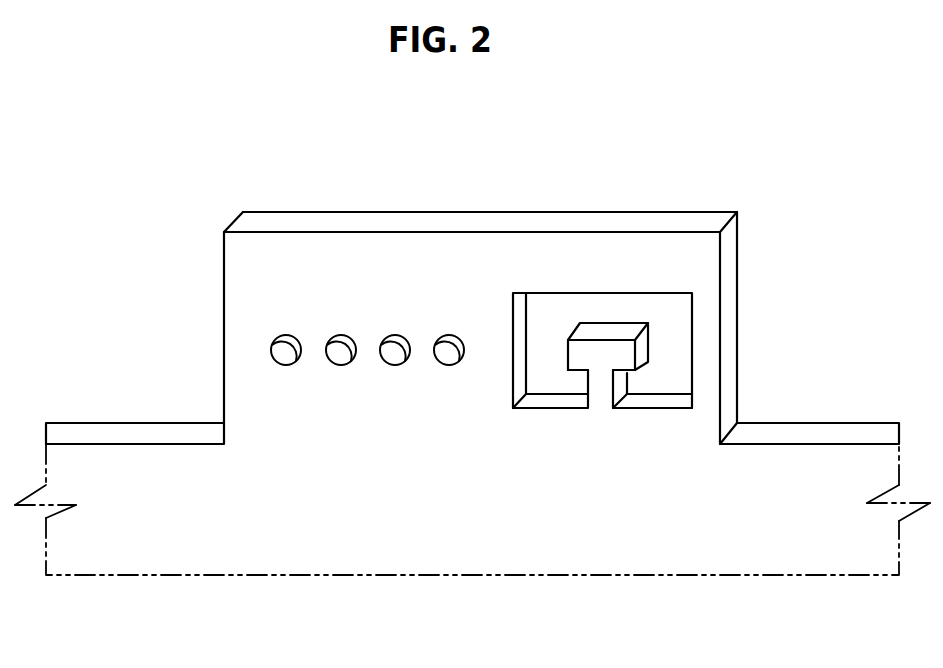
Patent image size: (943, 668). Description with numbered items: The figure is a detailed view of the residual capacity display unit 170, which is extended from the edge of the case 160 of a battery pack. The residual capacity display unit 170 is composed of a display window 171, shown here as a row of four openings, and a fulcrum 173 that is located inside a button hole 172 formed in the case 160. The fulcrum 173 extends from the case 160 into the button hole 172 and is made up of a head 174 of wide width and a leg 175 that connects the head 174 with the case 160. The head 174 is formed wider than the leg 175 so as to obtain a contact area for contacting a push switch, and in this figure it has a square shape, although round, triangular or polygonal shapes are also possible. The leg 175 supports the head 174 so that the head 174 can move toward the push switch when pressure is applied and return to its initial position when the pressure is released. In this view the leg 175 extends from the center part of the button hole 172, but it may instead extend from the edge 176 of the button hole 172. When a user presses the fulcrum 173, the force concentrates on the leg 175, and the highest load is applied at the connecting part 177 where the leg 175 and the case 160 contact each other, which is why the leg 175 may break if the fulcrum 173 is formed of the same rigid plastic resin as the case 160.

The case 160 is at (777, 551).
The residual capacity display unit 170 is at (829, 124).
The display window 171 is at (272, 340).
The button hole 172 is at (546, 309).
The fulcrum 173 is at (590, 144).
The head 174 is at (627, 347).
The leg 175 is at (598, 387).
The edge 176 is at (686, 404).
The connecting part 177 is at (581, 404).